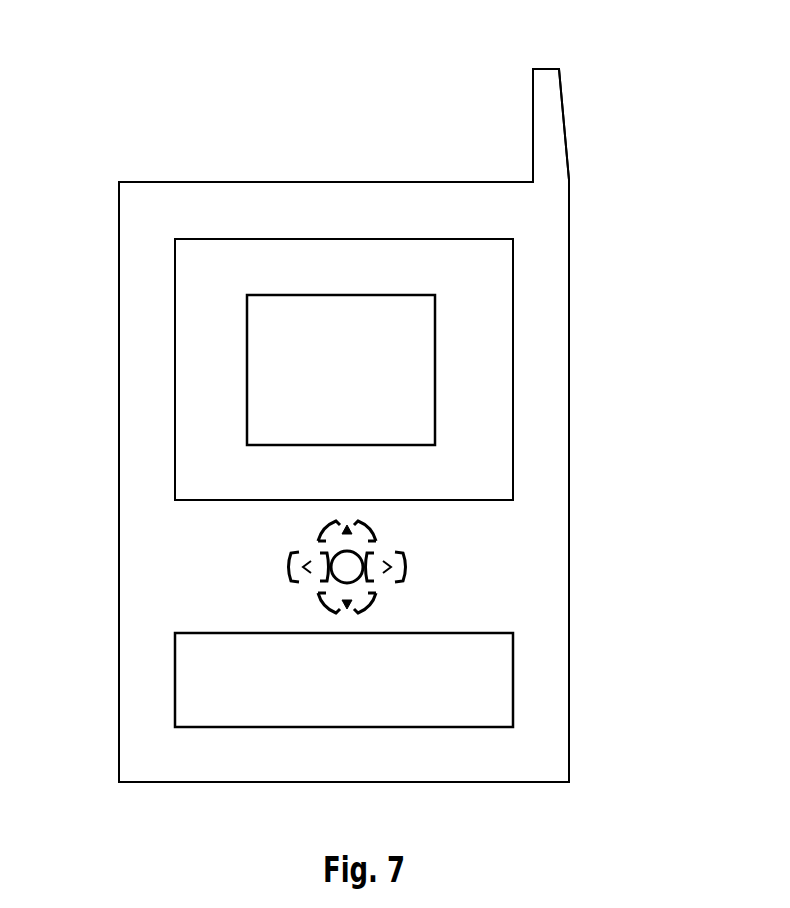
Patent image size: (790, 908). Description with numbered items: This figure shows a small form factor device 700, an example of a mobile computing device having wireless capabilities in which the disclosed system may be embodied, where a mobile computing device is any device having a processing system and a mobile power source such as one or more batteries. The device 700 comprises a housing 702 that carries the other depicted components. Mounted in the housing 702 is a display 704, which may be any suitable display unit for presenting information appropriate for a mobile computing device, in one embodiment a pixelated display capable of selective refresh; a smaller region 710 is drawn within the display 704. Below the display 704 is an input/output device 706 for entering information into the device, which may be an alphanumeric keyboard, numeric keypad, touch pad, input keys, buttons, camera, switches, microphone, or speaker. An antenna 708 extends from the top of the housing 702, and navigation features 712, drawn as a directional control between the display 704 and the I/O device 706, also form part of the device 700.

The small form factor device 700 is at (138, 88).
The housing 702 is at (569, 482).
The display 704 is at (513, 255).
The input/output (I/O) device 706 is at (514, 670).
The antenna 708 is at (538, 118).
The display window 710 is at (435, 393).
The navigation features 712 is at (415, 558).